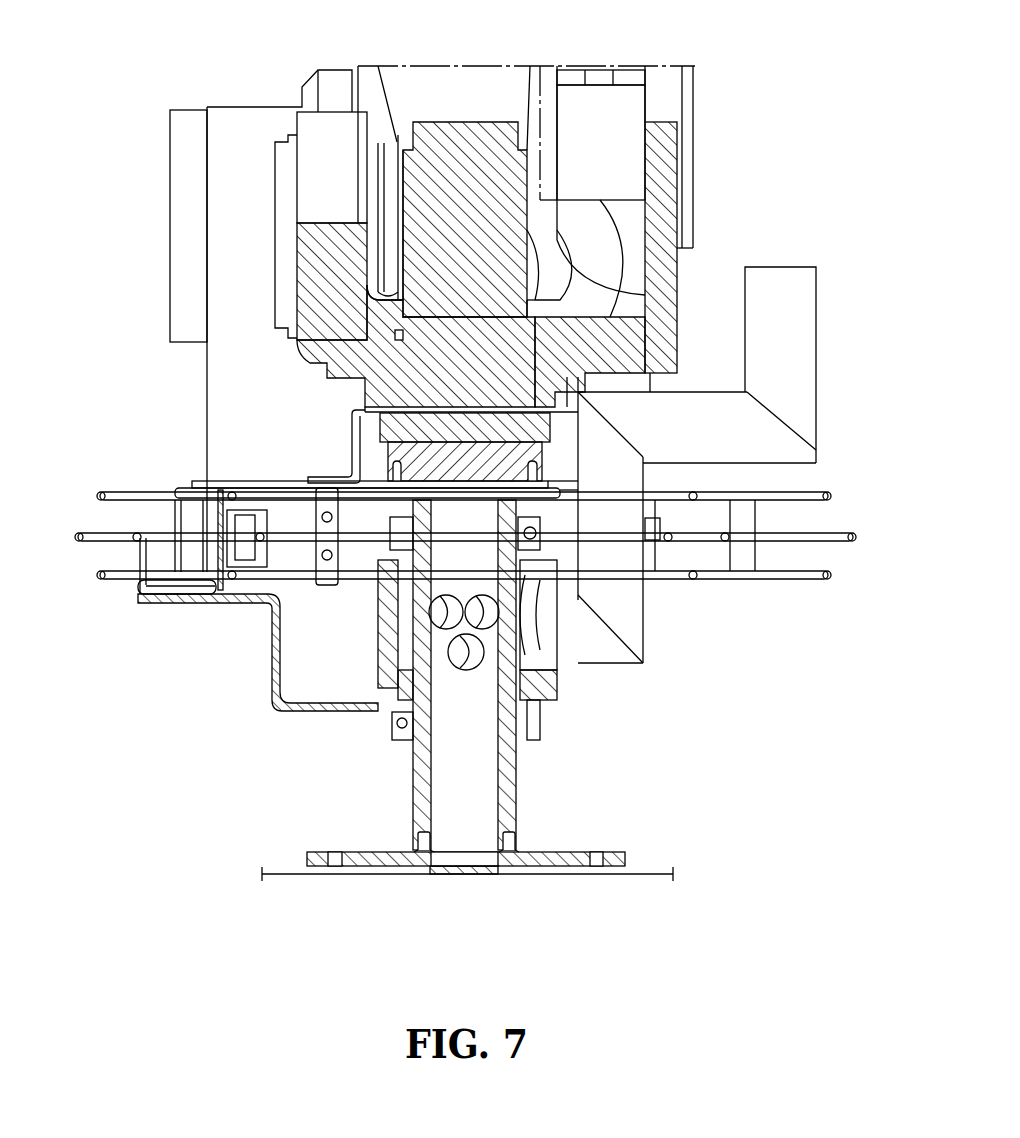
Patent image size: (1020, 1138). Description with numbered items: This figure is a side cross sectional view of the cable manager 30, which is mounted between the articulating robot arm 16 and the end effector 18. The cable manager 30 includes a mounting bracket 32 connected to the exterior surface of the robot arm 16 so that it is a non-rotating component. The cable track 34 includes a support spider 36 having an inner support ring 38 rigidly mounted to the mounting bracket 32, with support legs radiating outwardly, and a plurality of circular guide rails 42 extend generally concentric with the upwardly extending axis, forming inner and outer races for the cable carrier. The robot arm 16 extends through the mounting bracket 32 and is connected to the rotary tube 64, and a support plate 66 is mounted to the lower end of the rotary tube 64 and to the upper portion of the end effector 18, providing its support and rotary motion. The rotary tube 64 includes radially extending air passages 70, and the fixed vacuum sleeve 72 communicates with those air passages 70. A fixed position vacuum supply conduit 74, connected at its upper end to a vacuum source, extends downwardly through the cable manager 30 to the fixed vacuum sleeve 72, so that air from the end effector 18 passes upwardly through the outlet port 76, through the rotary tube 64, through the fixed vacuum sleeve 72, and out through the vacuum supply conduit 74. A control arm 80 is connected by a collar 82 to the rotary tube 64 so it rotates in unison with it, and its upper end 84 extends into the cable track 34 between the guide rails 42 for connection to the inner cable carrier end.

The robot arm 16 is at (482, 123).
The end effector 18 is at (648, 874).
The cable manager 30 is at (823, 470).
The mounting bracket 32 is at (358, 447).
The cable track 34 is at (858, 523).
The support spider 36 is at (222, 482).
The inner support ring 38 is at (270, 483).
The circular guide rails 42 is at (101, 575).
The rotary tube 64 is at (528, 760).
The support plate 66 is at (600, 855).
The air passages 70 is at (435, 660).
The fixed vacuum sleeve 72 is at (380, 623).
The vacuum supply conduit 74 is at (800, 300).
The outlet port 76 is at (465, 874).
The control arm 80 is at (273, 685).
The collar 82 is at (540, 723).
The upper end 84 is at (140, 562).